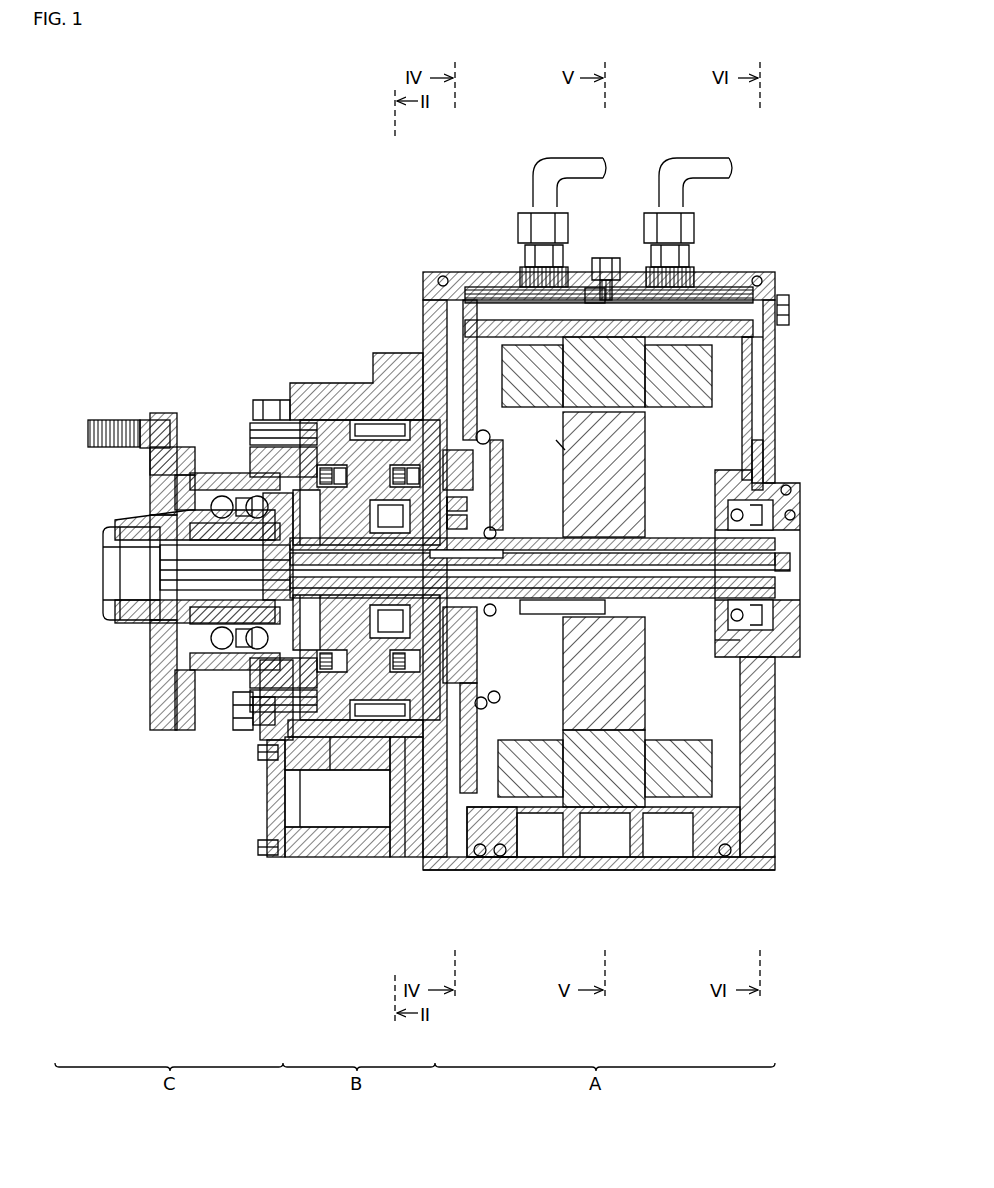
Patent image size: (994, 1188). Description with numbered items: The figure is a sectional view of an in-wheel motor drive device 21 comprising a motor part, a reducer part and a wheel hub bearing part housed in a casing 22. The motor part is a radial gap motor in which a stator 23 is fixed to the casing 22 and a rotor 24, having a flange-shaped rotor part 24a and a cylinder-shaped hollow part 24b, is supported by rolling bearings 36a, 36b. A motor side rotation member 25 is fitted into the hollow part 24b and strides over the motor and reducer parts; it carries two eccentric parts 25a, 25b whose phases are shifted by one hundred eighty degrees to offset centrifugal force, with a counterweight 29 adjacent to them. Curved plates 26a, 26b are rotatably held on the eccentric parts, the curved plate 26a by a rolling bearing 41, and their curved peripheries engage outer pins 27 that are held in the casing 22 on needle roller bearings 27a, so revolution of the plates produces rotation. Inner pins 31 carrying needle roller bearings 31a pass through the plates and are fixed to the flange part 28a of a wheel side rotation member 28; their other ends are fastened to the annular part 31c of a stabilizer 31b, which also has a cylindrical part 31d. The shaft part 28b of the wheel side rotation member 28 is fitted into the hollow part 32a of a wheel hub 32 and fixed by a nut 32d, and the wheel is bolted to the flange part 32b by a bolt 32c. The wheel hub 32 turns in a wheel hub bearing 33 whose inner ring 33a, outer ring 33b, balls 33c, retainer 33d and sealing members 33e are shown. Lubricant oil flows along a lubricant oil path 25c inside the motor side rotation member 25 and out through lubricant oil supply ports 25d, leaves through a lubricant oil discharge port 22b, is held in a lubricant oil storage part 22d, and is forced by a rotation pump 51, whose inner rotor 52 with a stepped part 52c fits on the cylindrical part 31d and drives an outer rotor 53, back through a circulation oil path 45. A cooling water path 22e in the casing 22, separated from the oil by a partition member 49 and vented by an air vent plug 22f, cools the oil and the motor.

The in-wheel motor drive device 21 is at (245, 233).
The casing 22 is at (763, 272).
The lubricant oil discharge port 22b is at (373, 760).
The lubricant oil storage part 22d is at (343, 803).
The cooling water path 22e is at (530, 292).
The air vent plug 22f is at (606, 258).
The stator 23 is at (480, 457).
The rotor 24 is at (818, 437).
The rotor part 24a is at (575, 465).
The hollow part 24b is at (683, 540).
The motor side rotation member 25 is at (745, 591).
The eccentric part 25a is at (330, 576).
The eccentric part 25b is at (300, 557).
The lubricant oil path 25c is at (790, 572).
The lubricant oil supply port 25d is at (538, 760).
The curved plate 26a is at (393, 420).
The curved plate 26b is at (358, 440).
The outer pin 27 is at (385, 790).
The needle roller bearing 27a is at (330, 765).
The wheel side rotation member 28 is at (238, 786).
The flange part 28a is at (231, 668).
The shaft part 28b is at (187, 668).
The counterweight 29 is at (480, 340).
The inner pin 31 is at (280, 745).
The needle roller bearing 31a is at (437, 830).
The stabilizer 31b is at (520, 915).
The annular part 31c is at (470, 847).
The cylindrical part 31d is at (506, 808).
The wheel hub 32 is at (147, 710).
The hollow part 32a is at (195, 600).
The flange part 32b is at (150, 690).
The bolt 32c is at (106, 425).
The nut 32d is at (130, 585).
The wheel hub bearing 33 is at (318, 328).
The inner ring 33a is at (222, 475).
The outer ring 33b is at (248, 480).
The ball 33c is at (232, 462).
The retainer 33d is at (268, 420).
The sealing member 33e is at (205, 480).
The rolling bearing 36a is at (760, 612).
The rolling bearing 36b is at (718, 625).
The rolling bearing 41 is at (452, 340).
The circulation oil path 45 is at (717, 313).
The partition member 49 is at (588, 300).
The rotation pump 51 is at (813, 348).
The inner rotor 52 is at (450, 523).
The stepped part 52c is at (560, 447).
The outer rotor 53 is at (460, 507).